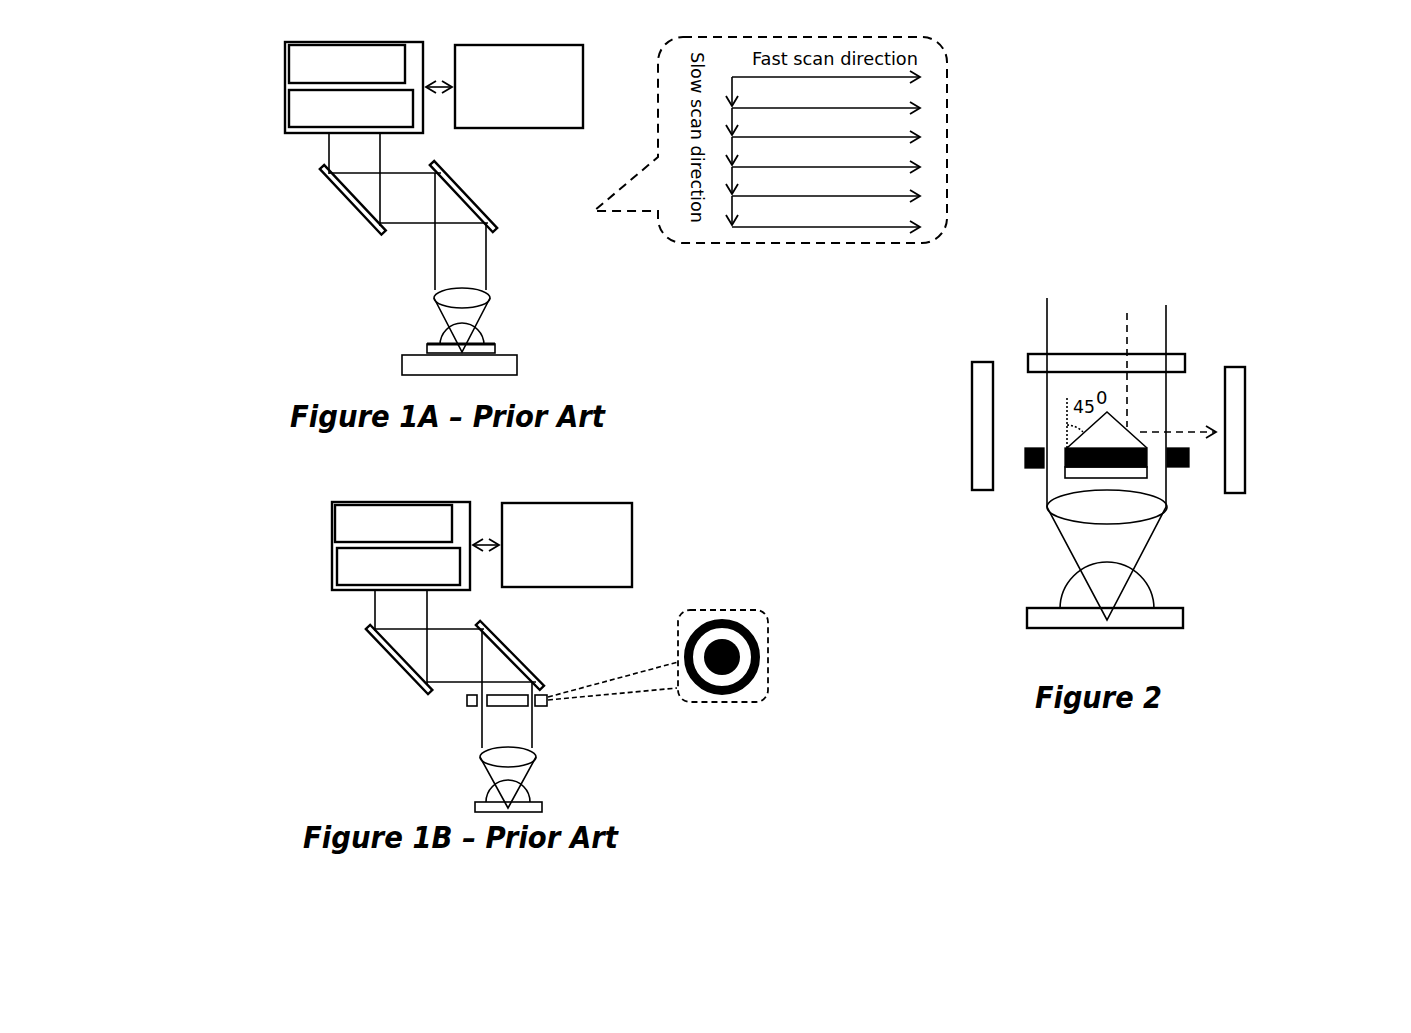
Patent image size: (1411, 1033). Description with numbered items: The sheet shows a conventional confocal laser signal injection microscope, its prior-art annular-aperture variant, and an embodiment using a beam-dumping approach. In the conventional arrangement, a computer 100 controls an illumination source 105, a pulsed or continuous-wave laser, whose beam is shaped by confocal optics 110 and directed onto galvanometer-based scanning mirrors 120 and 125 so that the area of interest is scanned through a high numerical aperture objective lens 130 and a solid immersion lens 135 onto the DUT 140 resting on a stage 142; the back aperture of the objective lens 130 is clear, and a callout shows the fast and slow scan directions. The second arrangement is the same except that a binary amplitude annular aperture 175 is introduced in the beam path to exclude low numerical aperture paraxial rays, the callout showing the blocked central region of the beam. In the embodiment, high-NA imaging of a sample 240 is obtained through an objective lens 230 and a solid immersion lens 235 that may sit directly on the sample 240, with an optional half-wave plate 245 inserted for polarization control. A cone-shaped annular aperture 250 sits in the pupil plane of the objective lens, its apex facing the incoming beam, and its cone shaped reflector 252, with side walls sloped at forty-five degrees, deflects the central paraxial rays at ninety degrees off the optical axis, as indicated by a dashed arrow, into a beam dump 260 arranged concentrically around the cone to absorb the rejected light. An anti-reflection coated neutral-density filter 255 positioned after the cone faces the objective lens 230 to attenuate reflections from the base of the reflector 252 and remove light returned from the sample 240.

In FIG. 1A, the computer 100 is at (519, 86).
In FIG. 1B, the computer 100 is at (567, 545).
In FIG. 1A, the illumination source 105 is at (347, 64).
In FIG. 1B, the illumination source 105 is at (393, 523).
In FIG. 1A, the confocal optics 110 is at (351, 108).
In FIG. 1B, the confocal optics 110 is at (398, 566).
In FIG. 1A, the scanning mirror 120 is at (352, 207).
In FIG. 1B, the scanning mirror 120 is at (400, 660).
In FIG. 1A, the scanning mirror 125 is at (478, 204).
In FIG. 1B, the scanning mirror 125 is at (525, 660).
In FIG. 1A, the objective lens 130 is at (480, 293).
In FIG. 1B, the objective lens 130 is at (527, 752).
In FIG. 1A, the solid immersion lens 135 is at (482, 337).
In FIG. 1B, the solid immersion lens 135 is at (524, 792).
In FIG. 1A, the DUT 140 is at (486, 346).
In FIG. 1B, the DUT 140 is at (535, 803).
In FIG. 1A, the stage 142 is at (513, 372).
In FIG. 1B, the binary amplitude annular aperture 175 is at (468, 708).
In FIG. 2, the objective lens 230 is at (1142, 520).
In FIG. 2, the solid immersion lens 235 is at (1062, 603).
In FIG. 2, the sample 240 is at (1155, 627).
In FIG. 2, the half-wave plate 245 is at (1192, 359).
In FIG. 2, the cone-shaped annular aperture 250 is at (1054, 469).
In FIG. 2, the cone shaped reflector 252 is at (1113, 430).
In FIG. 2, the neutral-density filter 255 is at (1151, 479).
In FIG. 2, the beam dump 260 is at (982, 475).